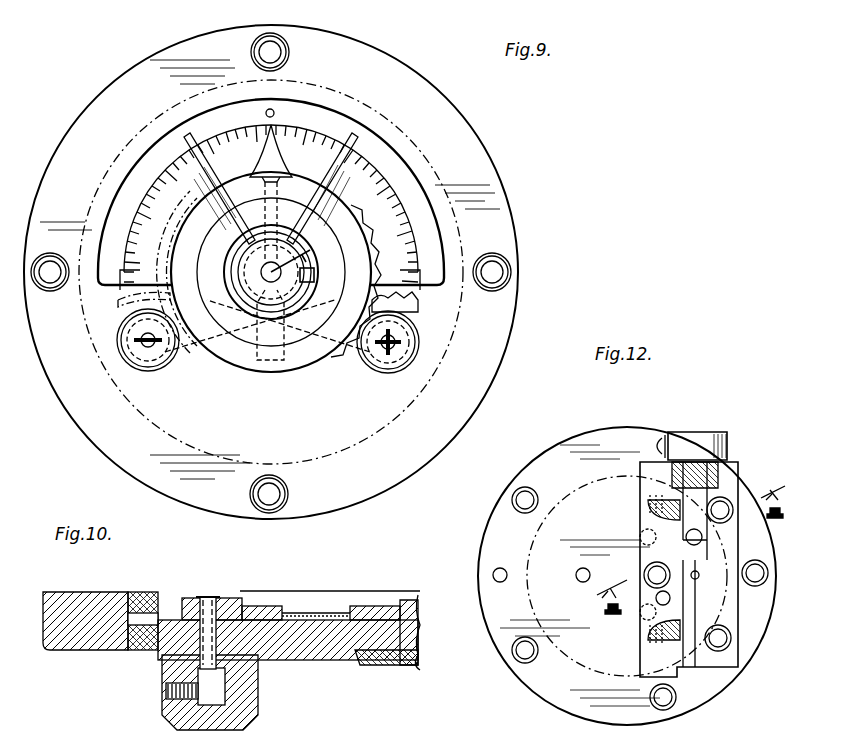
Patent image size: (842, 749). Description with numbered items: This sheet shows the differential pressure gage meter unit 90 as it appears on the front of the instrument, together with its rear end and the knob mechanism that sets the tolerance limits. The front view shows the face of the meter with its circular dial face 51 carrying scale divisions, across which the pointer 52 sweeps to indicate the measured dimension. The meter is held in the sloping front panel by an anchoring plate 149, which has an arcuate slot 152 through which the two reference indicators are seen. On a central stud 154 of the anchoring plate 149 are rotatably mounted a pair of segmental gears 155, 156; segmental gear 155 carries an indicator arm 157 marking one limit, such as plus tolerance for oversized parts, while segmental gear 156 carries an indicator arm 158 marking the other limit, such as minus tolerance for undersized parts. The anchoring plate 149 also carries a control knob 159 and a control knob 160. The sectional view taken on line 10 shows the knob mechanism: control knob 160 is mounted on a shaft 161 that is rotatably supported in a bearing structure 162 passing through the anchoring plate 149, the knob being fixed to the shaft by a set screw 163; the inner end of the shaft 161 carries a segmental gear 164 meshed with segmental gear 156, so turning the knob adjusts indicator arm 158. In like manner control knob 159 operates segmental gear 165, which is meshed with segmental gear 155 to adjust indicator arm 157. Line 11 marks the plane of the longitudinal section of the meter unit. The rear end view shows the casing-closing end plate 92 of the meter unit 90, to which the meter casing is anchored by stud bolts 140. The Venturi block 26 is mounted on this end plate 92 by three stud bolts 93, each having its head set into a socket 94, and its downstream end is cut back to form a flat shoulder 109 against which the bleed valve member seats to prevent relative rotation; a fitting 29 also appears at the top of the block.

In FIG. 9, the section line 10 is at (18, 414).
In FIG. 9, the section line 11 is at (268, 539).
In FIG. 12, the Venturi block 26 is at (636, 545).
In FIG. 12, the fitting cap 29 is at (727, 445).
In FIG. 9, the dial face 51 is at (298, 126).
In FIG. 9, the pointer 52 is at (276, 178).
In FIG. 9, the differential pressure gage meter unit 90 is at (505, 178).
In FIG. 12, the differential pressure gage meter unit 90 is at (652, 748).
In FIG. 12, the end plate 92 is at (558, 448).
In FIG. 12, the stud bolts 93 is at (735, 490).
In FIG. 12, the socket 94 is at (738, 645).
In FIG. 12, the flat shoulder 109 is at (680, 672).
In FIG. 12, the stud bolts 140 is at (755, 562).
In FIG. 9, the anchoring plate 149 is at (498, 365).
In FIG. 10, the anchoring plate 149 is at (78, 640).
In FIG. 10, the arcuate slot 152 is at (141, 739).
In FIG. 10, the central stud 154 is at (412, 598).
In FIG. 9, the segmental gear 155 is at (365, 240).
In FIG. 9, the segmental gear 156 is at (196, 232).
In FIG. 10, the segmental gear 156 is at (333, 612).
In FIG. 9, the indicator arm 157 is at (360, 142).
In FIG. 10, the indicator arm 157 is at (268, 748).
In FIG. 9, the indicator arm 158 is at (185, 142).
In FIG. 9, the control knob 159 is at (385, 373).
In FIG. 9, the control knob 160 is at (158, 371).
In FIG. 10, the control knob 160 is at (262, 696).
In FIG. 10, the shaft 161 is at (210, 604).
In FIG. 10, the bearing structure 162 is at (170, 648).
In FIG. 10, the set screw 163 is at (163, 695).
In FIG. 9, the segmental gear 164 is at (135, 308).
In FIG. 10, the segmental gear 164 is at (265, 606).
In FIG. 9, the segmental gear 165 is at (413, 310).